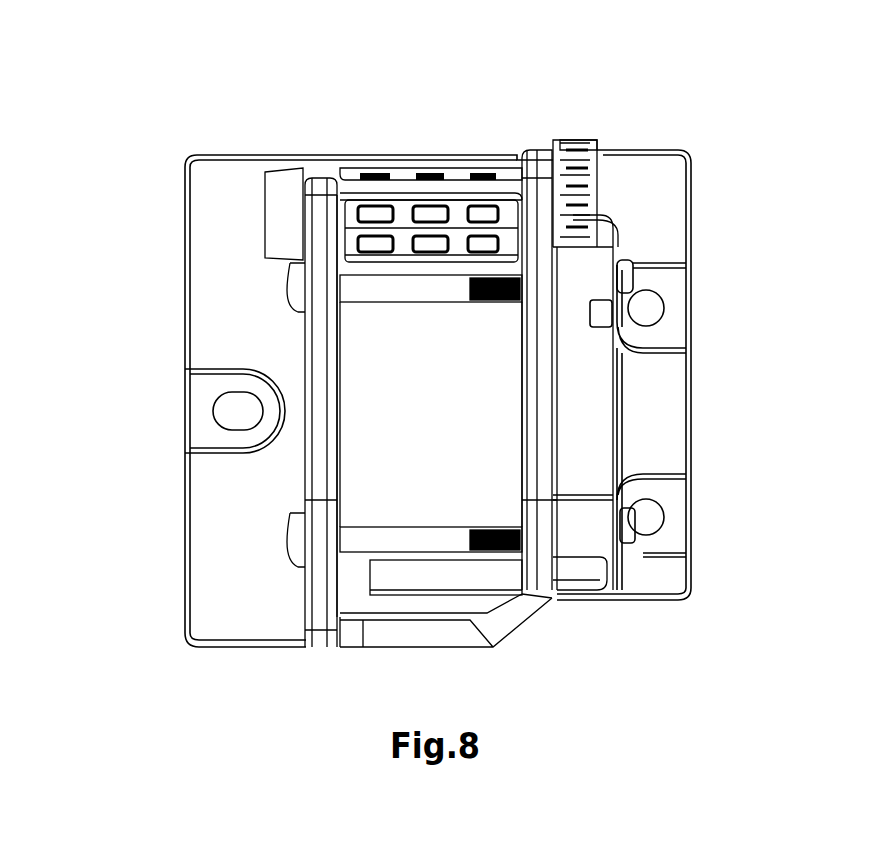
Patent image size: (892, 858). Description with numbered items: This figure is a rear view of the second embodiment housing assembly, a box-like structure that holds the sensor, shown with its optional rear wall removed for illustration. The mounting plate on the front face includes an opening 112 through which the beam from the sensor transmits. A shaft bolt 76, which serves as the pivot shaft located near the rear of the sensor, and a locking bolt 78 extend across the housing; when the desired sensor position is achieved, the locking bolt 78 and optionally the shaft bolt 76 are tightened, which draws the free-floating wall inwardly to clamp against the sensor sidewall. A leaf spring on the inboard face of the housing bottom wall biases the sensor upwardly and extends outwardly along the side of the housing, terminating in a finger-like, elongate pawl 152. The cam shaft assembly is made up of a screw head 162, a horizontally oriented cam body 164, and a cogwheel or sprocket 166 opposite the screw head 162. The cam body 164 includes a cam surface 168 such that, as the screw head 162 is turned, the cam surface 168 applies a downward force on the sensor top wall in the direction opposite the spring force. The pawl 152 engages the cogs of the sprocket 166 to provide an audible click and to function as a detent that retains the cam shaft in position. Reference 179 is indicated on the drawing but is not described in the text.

The shaft bolt 76 is at (430, 538).
The locking bolt 78 is at (397, 293).
The opening 112 is at (400, 438).
The pawl 152 is at (597, 213).
The screw head 162 is at (267, 220).
The cam body 164 is at (405, 243).
The sprocket 166 is at (583, 180).
The cam surface 168 is at (593, 148).
The guide rails 179 is at (340, 376).